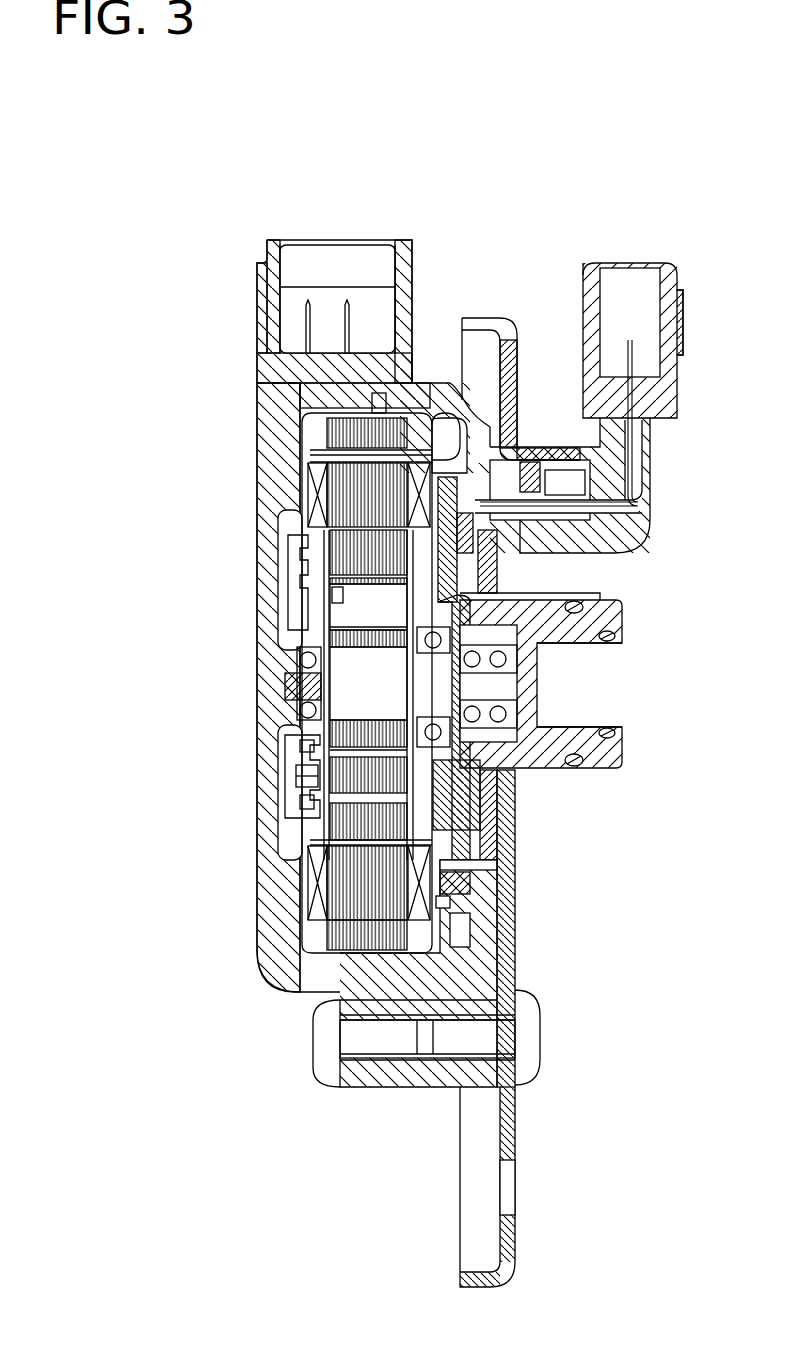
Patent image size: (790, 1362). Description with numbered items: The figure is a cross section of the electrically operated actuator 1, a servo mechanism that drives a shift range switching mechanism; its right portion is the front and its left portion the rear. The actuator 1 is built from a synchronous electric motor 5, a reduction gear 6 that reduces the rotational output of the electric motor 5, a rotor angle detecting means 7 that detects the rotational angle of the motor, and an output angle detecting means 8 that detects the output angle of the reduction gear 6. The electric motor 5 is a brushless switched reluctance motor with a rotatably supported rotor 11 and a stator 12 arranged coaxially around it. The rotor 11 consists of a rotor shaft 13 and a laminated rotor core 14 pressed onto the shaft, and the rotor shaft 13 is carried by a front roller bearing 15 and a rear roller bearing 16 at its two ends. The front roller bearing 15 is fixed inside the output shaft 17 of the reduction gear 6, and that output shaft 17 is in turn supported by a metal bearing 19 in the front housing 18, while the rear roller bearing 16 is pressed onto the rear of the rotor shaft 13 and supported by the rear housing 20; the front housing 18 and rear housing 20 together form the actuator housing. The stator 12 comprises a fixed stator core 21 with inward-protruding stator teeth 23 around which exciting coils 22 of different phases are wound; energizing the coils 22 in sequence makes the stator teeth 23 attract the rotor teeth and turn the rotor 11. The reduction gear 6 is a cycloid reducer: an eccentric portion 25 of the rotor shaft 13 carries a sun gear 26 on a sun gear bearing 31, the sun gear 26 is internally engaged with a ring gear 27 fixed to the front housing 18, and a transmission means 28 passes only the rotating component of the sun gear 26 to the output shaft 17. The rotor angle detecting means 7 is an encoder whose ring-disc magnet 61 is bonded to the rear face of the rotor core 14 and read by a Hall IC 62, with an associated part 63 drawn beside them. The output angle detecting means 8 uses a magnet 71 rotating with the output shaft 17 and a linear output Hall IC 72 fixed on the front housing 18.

The electrically operated actuator 1 is at (203, 268).
The synchronous electric motor 5 is at (135, 457).
The reduction gear 6 is at (585, 780).
The rotor angle detecting means 7 is at (183, 722).
The output angle detecting means 8 is at (545, 262).
The rotor 11 is at (183, 523).
The stator 12 is at (183, 413).
The rotor shaft 13 is at (327, 603).
The rotor core 14 is at (327, 549).
The front roller bearing 15 is at (505, 658).
The rear roller bearing 16 is at (300, 664).
The output shaft 17 is at (523, 742).
The front housing 18 is at (480, 967).
The metal bearing 19 is at (593, 626).
The rear housing 20 is at (288, 948).
The stator core 21 is at (327, 434).
The exciting coils 22 is at (327, 500).
The stator teeth 23 is at (327, 470).
The eccentric portion 25 is at (497, 772).
The sun gear 26 is at (463, 885).
The ring gear 27 is at (455, 900).
The transmission means 28 is at (470, 855).
The sun gear bearing 31 is at (540, 688).
The magnet 61 is at (305, 748).
The Hall IC 62 is at (305, 778).
The sensor substrate 63 is at (305, 800).
The magnet 71 is at (535, 555).
The linear output Hall IC 72 is at (500, 520).